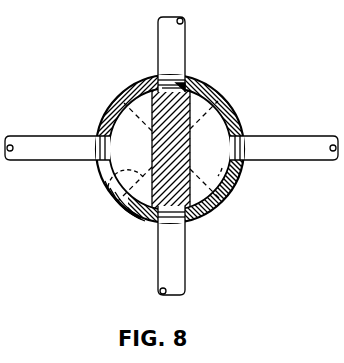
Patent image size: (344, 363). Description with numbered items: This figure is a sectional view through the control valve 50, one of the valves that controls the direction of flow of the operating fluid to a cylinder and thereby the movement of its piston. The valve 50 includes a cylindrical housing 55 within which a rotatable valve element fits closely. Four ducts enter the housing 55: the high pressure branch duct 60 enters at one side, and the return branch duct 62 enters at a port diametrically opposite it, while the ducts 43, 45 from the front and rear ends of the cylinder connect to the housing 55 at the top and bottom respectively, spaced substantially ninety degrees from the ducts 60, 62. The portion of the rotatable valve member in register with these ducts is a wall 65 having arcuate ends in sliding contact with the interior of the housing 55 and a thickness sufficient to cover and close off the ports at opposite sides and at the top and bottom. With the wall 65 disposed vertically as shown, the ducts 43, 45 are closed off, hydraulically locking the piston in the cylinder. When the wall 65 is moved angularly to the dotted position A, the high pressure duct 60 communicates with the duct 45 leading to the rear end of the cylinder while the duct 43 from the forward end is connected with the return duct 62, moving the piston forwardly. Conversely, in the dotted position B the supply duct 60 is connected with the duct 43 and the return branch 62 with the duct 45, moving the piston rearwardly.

The duct 43 is at (177, 38).
The duct 45 is at (176, 248).
The control valve 50 is at (117, 89).
The cylindrical housing 55 is at (232, 107).
The branch duct 60 is at (284, 160).
The branch duct 62 is at (40, 152).
The wall 65 is at (127, 207).
The position A is at (101, 186).
The position B is at (236, 187).